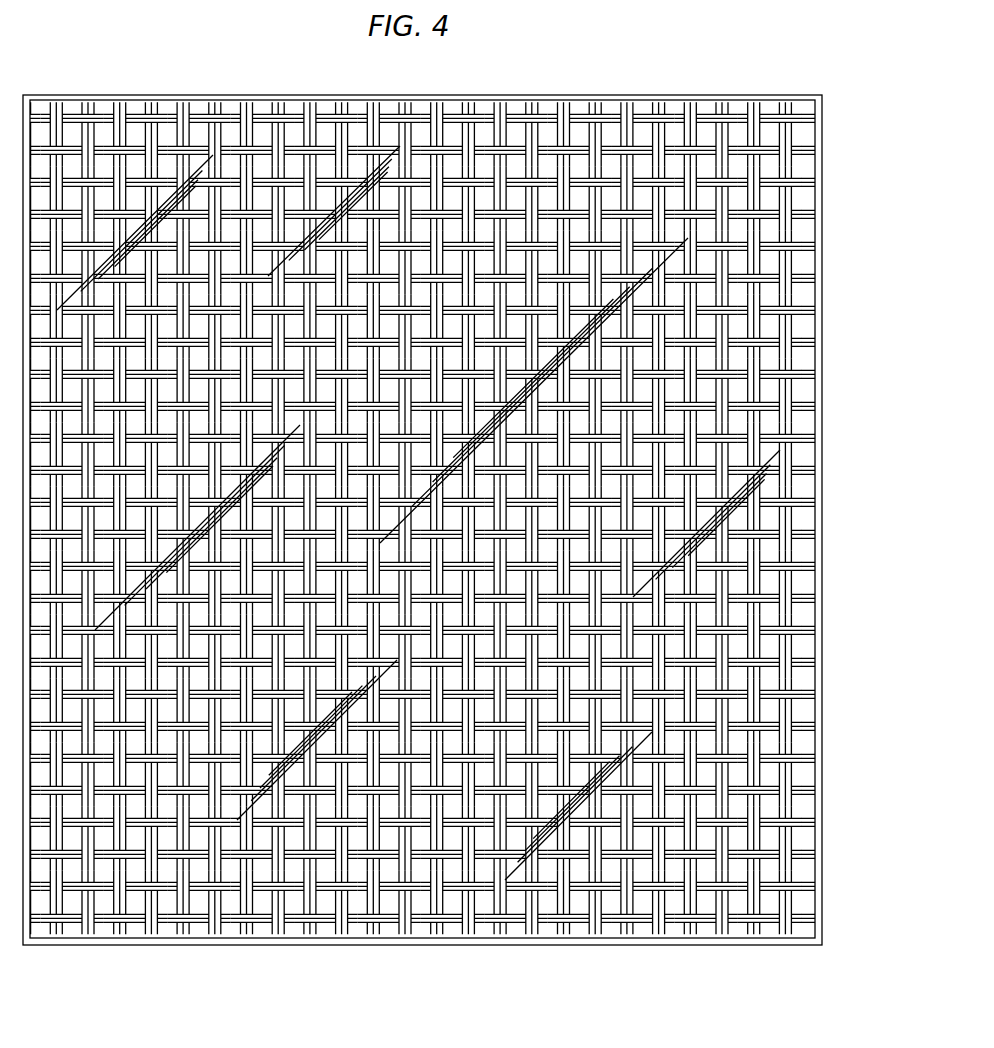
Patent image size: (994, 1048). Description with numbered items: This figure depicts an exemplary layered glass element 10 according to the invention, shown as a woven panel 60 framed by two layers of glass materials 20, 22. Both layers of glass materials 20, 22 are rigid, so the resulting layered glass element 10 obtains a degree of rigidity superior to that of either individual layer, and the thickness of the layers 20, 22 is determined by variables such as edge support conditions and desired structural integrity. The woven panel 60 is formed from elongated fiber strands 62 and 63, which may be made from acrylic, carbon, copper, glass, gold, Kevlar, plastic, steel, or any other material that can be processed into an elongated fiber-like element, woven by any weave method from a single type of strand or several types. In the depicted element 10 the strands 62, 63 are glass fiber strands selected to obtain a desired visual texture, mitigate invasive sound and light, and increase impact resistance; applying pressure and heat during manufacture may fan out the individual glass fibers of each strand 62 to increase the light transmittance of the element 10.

The layered glass element 10 is at (106, 74).
The layer of glass material 20 is at (447, 908).
The layer of glass material 22 is at (612, 947).
The woven panel 60 is at (718, 135).
The elongated fiber strand 62 is at (795, 165).
The elongated fiber strand 63 is at (795, 245).